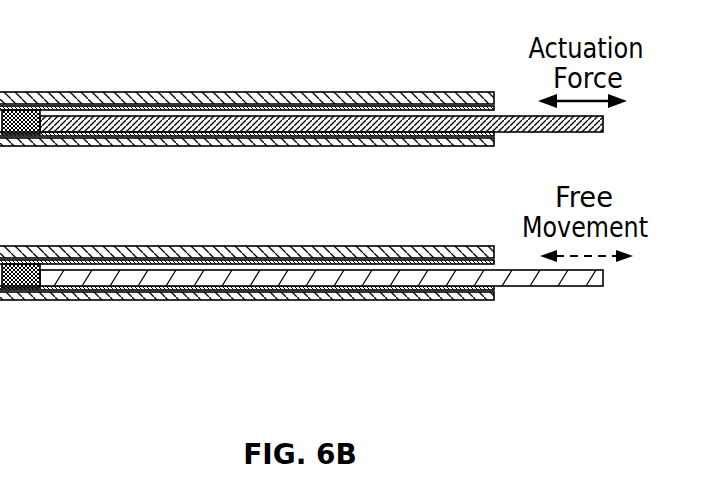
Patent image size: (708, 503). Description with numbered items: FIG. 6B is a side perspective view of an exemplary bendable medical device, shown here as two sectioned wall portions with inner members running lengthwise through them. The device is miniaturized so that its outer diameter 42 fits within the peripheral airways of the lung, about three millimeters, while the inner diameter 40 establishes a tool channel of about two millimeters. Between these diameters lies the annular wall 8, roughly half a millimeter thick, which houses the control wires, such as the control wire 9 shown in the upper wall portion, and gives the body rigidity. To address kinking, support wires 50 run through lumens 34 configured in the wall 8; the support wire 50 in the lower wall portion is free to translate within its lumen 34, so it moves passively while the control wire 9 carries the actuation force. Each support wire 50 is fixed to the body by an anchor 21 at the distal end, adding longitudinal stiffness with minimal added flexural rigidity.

The annular wall 8 is at (301, 311).
The control wire 9 is at (210, 118).
The anchor 21 is at (43, 110).
The lumen 34 is at (410, 290).
The inner diameter 40 is at (193, 247).
The outer diameter 42 is at (47, 300).
The support wire 50 is at (247, 277).